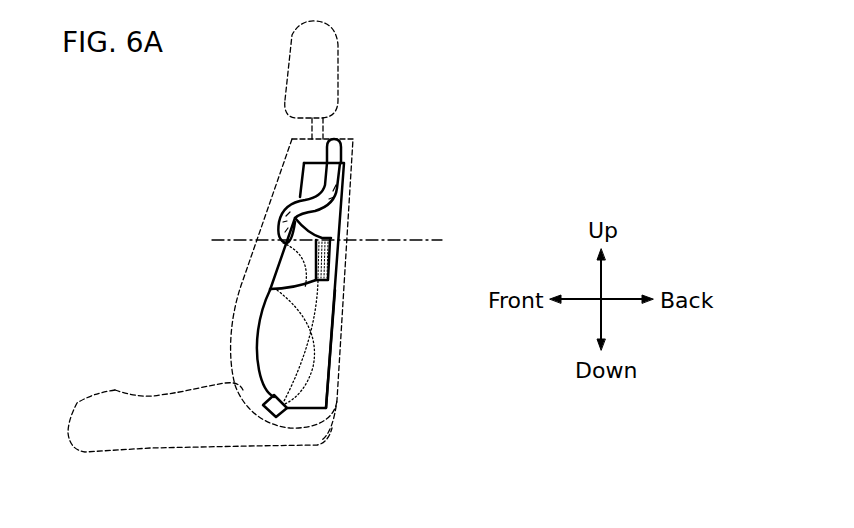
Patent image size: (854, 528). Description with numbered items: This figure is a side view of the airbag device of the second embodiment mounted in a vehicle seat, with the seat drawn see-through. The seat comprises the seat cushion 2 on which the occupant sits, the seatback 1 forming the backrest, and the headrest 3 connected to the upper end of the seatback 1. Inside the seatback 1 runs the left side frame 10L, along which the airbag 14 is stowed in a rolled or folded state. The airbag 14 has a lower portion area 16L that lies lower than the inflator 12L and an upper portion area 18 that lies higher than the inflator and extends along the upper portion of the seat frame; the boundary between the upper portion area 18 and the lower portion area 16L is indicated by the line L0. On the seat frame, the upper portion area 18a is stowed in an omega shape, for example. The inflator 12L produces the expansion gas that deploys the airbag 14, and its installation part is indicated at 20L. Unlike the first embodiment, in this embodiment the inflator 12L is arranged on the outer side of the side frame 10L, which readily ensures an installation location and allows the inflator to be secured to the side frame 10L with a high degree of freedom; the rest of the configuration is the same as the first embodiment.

The seatback 1 is at (342, 353).
The seat cushion 2 is at (115, 390).
The headrest 3 is at (337, 62).
The side frame 10L is at (317, 383).
The inflator 12L is at (325, 255).
The airbag 14 is at (288, 207).
The lower portion area 16L is at (310, 308).
The upper portion area 18 is at (342, 178).
The upper portion area on the seat frame 18a is at (339, 145).
The installation part of the inflator 20L is at (283, 277).
The boundary position L0 is at (338, 240).